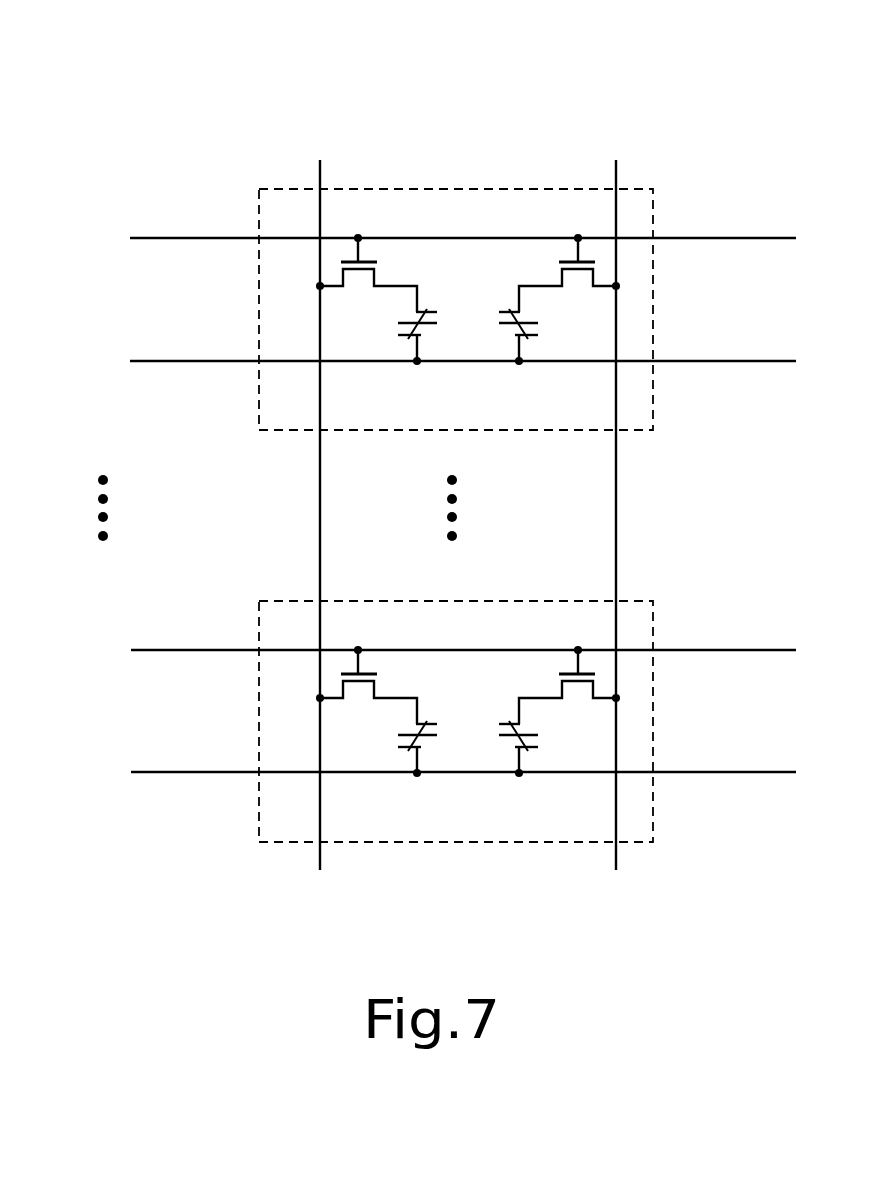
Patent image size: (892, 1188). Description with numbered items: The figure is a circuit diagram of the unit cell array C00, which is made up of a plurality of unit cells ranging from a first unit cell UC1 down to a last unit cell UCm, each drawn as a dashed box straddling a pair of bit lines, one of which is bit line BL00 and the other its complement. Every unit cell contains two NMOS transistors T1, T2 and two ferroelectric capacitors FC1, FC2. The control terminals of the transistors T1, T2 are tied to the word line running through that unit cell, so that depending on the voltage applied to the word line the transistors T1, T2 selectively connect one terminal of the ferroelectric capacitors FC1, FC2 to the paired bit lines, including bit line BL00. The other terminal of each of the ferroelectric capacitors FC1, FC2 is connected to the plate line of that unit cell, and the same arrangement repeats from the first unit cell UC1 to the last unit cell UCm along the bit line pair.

The unit cell array C00 is at (680, 82).
The unit cell UC1 is at (653, 189).
The unit cell UCm is at (653, 601).
The bit line BL00 is at (322, 500).
The NMOS transistor T1 is at (366, 479).
The NMOS transistor T2 is at (569, 479).
The ferroelectric capacitor FC1 is at (393, 543).
The ferroelectric capacitor FC2 is at (545, 543).